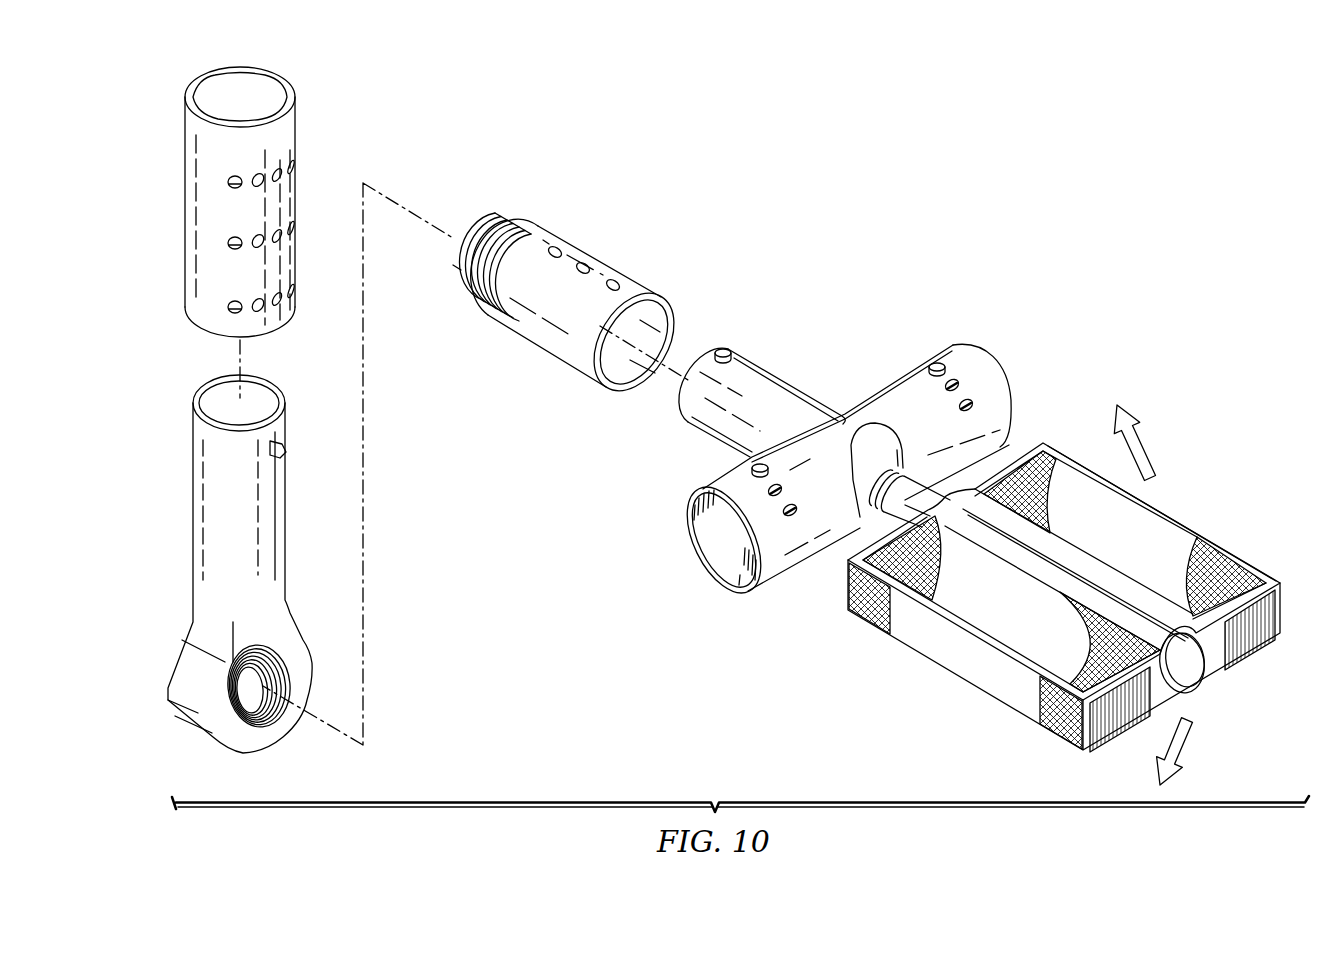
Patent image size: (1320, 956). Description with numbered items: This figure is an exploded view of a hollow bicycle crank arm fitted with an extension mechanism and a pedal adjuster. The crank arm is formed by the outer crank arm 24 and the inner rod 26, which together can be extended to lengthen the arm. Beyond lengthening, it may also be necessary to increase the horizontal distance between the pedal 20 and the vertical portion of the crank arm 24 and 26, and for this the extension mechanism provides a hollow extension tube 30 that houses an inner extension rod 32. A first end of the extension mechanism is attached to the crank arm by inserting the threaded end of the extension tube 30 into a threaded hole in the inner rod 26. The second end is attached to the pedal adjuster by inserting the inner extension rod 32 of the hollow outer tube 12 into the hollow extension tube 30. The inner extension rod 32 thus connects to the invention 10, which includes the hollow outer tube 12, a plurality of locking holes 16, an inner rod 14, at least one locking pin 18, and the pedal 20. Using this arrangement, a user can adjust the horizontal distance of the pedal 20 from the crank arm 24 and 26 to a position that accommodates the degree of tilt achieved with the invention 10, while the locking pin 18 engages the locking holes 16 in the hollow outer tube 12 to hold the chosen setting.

The invention 10 is at (870, 165).
The hollow outer tube 12 is at (887, 387).
The inner rod 14 is at (716, 555).
The locking holes 16 is at (955, 382).
The locking pin 18 is at (934, 364).
The pedal 20 is at (1180, 542).
The crank arm 24 is at (294, 192).
The inner rod 26 is at (286, 489).
The hollow extension tube 30 is at (588, 250).
The inner extension rod 32 is at (773, 374).